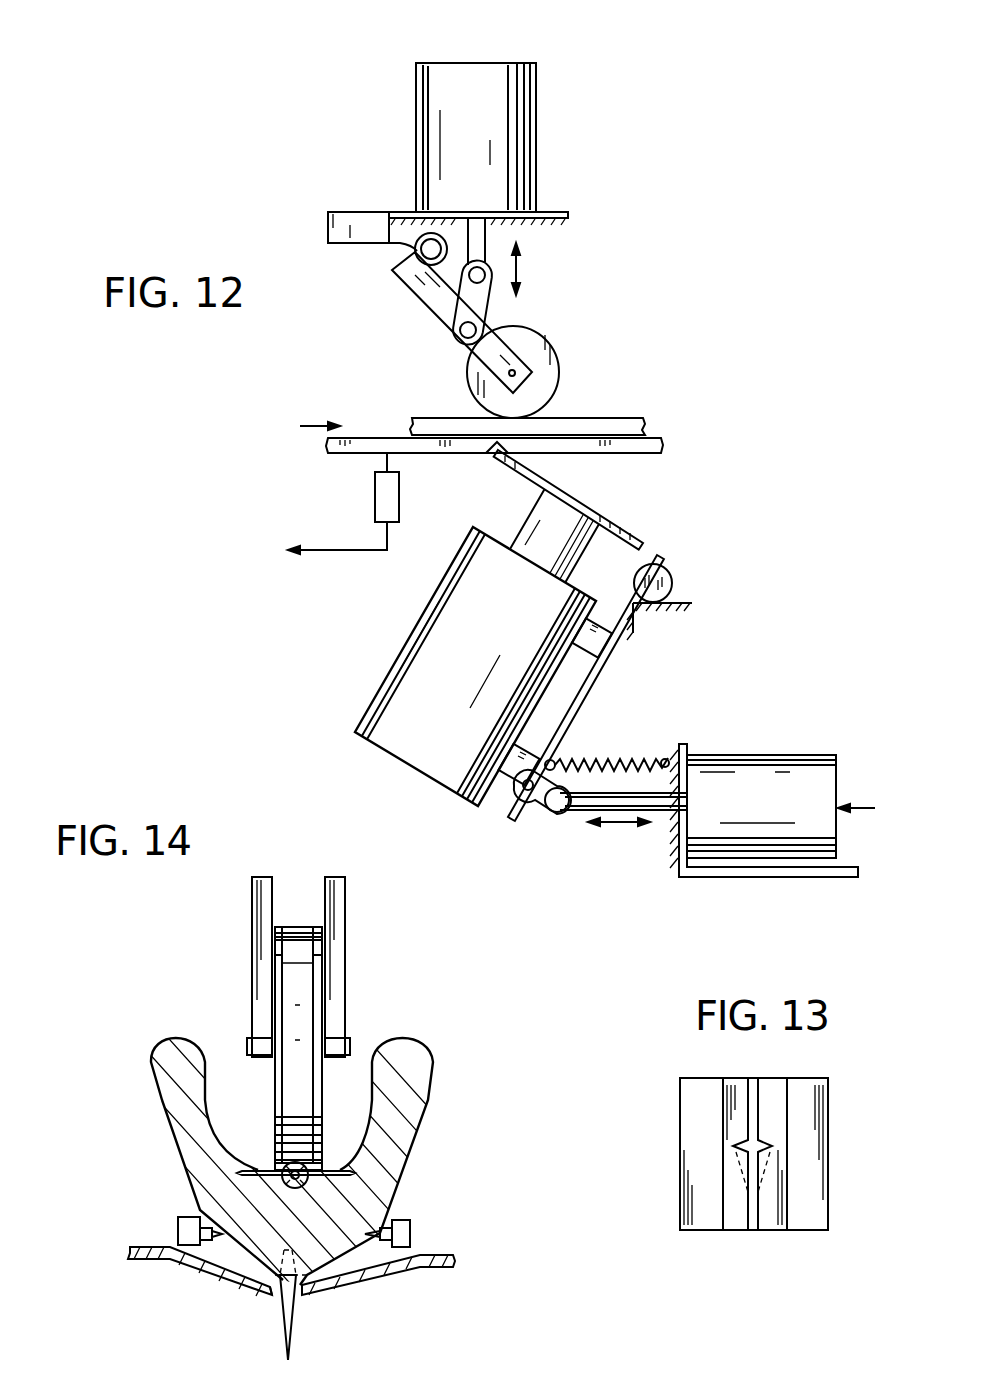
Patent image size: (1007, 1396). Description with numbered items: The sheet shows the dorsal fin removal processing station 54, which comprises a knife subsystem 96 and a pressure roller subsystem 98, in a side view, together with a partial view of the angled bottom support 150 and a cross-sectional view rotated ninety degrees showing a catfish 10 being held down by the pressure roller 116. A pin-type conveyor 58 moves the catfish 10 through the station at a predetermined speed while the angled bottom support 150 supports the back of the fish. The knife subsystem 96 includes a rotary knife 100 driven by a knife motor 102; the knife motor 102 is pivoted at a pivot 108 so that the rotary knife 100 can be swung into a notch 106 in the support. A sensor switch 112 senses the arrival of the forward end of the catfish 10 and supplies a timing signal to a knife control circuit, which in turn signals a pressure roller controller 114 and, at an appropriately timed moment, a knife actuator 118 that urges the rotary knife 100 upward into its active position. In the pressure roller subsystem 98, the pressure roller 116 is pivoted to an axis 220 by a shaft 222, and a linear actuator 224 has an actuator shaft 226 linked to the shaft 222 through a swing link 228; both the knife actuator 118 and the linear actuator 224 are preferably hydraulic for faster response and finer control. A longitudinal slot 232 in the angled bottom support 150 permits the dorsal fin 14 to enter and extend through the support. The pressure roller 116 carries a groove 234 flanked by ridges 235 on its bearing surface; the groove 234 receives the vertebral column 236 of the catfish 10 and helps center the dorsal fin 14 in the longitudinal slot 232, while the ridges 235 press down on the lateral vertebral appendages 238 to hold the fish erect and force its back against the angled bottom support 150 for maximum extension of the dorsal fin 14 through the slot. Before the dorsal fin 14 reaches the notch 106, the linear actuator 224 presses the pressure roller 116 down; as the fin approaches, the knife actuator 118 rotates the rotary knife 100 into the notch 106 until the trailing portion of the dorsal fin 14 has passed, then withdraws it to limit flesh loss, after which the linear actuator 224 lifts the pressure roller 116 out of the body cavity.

In FIG. 14, the catfish 10 is at (478, 1069).
In FIG. 14, the dorsal fin 14 is at (295, 1343).
In FIG. 12, the dorsal fin removal processing station 54 is at (297, 159).
In FIG. 12, the pin-type conveyor 58 is at (625, 422).
In FIG. 14, the pin-type conveyor 58 is at (404, 1230).
In FIG. 12, the knife subsystem 96 is at (814, 640).
In FIG. 12, the pressure roller subsystem 98 is at (598, 209).
In FIG. 14, the pressure roller subsystem 98 is at (147, 1003).
In FIG. 12, the rotary knife 100 is at (643, 543).
In FIG. 12, the knife motor 102 is at (383, 707).
In FIG. 12, the notch 106 is at (497, 455).
In FIG. 14, the notch 106 is at (248, 1285).
In FIG. 13, the notch 106 is at (772, 1146).
In FIG. 12, the pivot 108 is at (672, 583).
In FIG. 12, the sensor switch 112 is at (375, 497).
In FIG. 12, the pressure roller controller 114 is at (618, 128).
In FIG. 12, the pressure roller 116 is at (558, 363).
In FIG. 14, the pressure roller 116 is at (275, 1100).
In FIG. 12, the knife actuator 118 is at (788, 755).
In FIG. 12, the angled bottom support 150 is at (642, 450).
In FIG. 14, the angled bottom support 150 is at (415, 1265).
In FIG. 13, the angled bottom support 150 is at (828, 1216).
In FIG. 12, the axis 220 is at (417, 252).
In FIG. 12, the shaft 222 is at (445, 317).
In FIG. 14, the shaft 222 is at (345, 925).
In FIG. 12, the linear actuator 224 is at (520, 83).
In FIG. 12, the actuator shaft 226 is at (485, 233).
In FIG. 12, the swing link 228 is at (480, 308).
In FIG. 14, the longitudinal slot 232 is at (282, 1300).
In FIG. 13, the longitudinal slot 232 is at (757, 1085).
In FIG. 14, the groove 234 is at (297, 930).
In FIG. 14, the ridges 235 is at (322, 1100).
In FIG. 14, the vertebral column 236 is at (292, 1186).
In FIG. 14, the lateral vertebral appendages 238 is at (350, 1170).